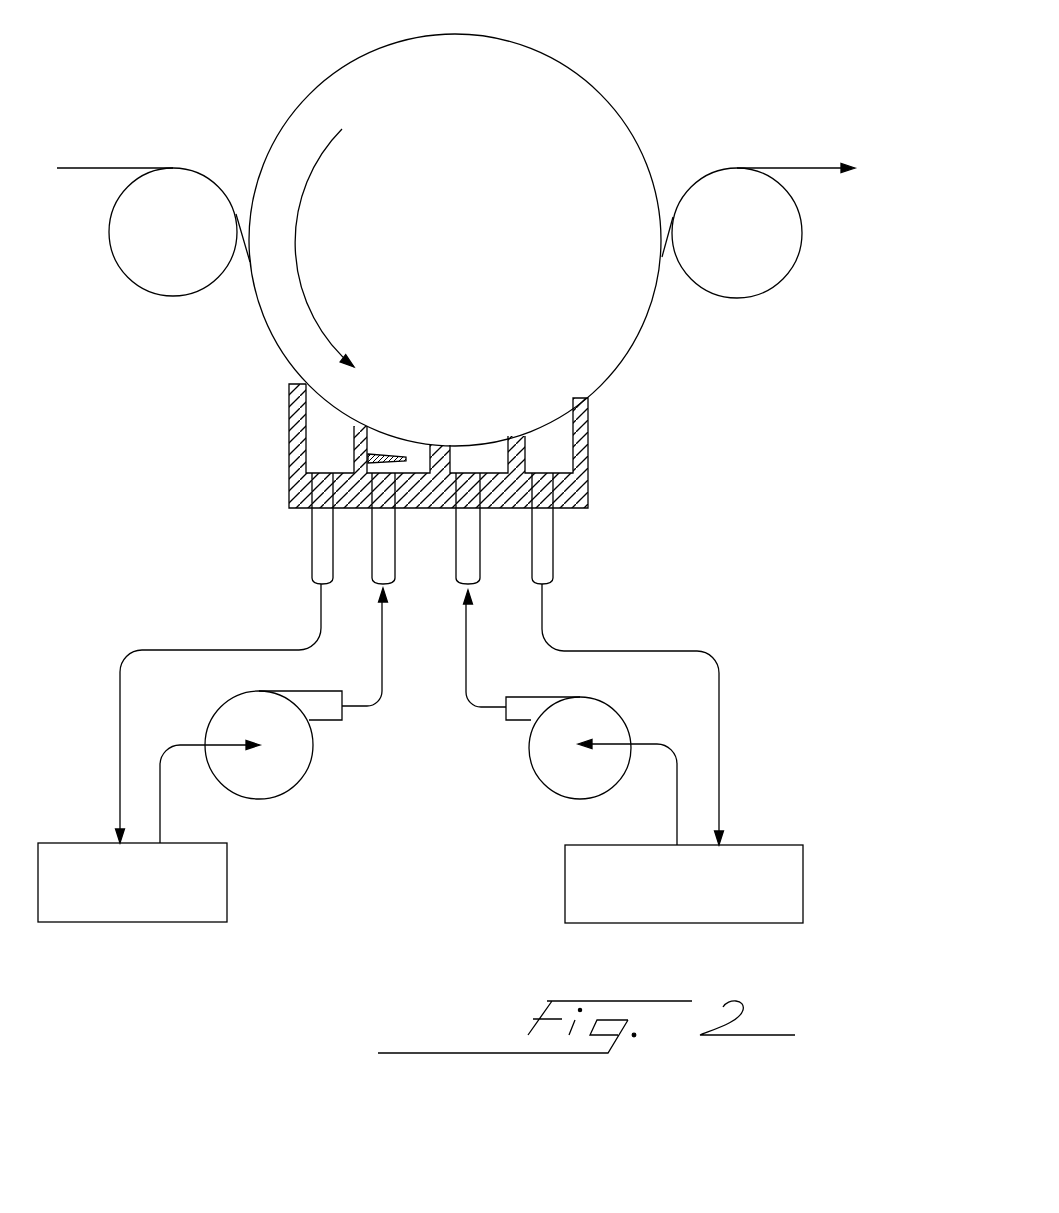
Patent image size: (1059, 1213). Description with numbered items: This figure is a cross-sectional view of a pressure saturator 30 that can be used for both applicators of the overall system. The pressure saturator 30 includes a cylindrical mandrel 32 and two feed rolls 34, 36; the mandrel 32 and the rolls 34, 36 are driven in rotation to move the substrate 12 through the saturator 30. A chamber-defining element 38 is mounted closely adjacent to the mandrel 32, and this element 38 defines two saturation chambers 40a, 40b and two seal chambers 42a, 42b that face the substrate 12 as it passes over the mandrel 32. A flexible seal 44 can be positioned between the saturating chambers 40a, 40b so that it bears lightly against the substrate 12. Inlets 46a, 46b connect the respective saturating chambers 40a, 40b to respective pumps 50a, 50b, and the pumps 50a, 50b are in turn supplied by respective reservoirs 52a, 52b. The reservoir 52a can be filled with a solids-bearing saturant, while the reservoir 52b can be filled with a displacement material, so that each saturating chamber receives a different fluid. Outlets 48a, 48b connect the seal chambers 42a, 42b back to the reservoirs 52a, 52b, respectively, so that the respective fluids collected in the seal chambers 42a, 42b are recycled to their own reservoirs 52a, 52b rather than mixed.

The substrate 12 is at (788, 168).
The pressure saturator 30 is at (188, 410).
The cylindrical mandrel 32 is at (268, 320).
The feed roll 34 is at (141, 278).
The feed roll 36 is at (741, 288).
The chamber-defining element 38 is at (590, 457).
The saturation chamber 40a is at (410, 445).
The saturation chamber 40b is at (490, 450).
The seal chamber 42a is at (325, 416).
The seal chamber 42b is at (560, 423).
The flexible seal 44 is at (450, 443).
The inlet 46a is at (387, 555).
The inlet 46b is at (462, 567).
The outlet 48a is at (312, 545).
The outlet 48b is at (553, 562).
The pump 50a is at (297, 768).
The pump 50b is at (548, 770).
The reservoir 52a is at (172, 923).
The reservoir 52b is at (762, 845).